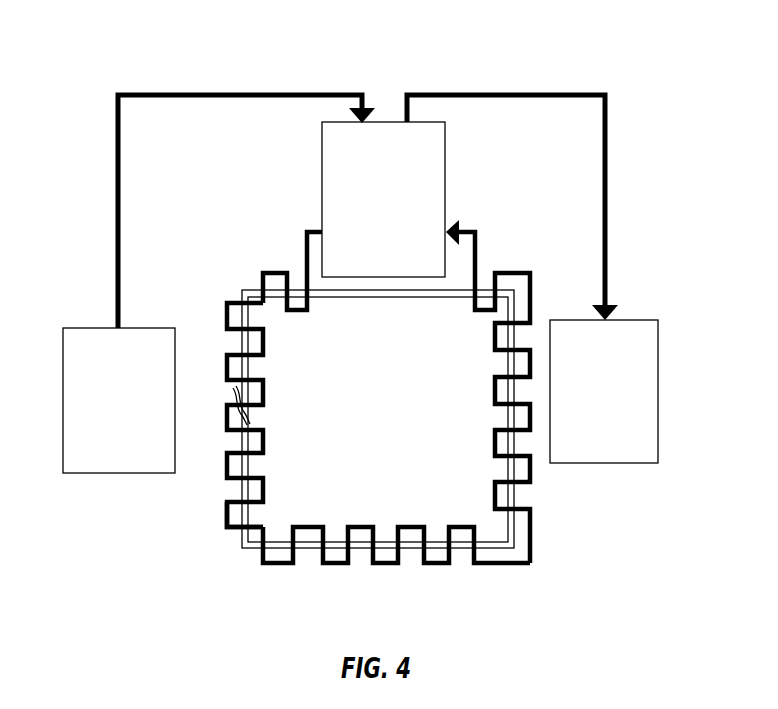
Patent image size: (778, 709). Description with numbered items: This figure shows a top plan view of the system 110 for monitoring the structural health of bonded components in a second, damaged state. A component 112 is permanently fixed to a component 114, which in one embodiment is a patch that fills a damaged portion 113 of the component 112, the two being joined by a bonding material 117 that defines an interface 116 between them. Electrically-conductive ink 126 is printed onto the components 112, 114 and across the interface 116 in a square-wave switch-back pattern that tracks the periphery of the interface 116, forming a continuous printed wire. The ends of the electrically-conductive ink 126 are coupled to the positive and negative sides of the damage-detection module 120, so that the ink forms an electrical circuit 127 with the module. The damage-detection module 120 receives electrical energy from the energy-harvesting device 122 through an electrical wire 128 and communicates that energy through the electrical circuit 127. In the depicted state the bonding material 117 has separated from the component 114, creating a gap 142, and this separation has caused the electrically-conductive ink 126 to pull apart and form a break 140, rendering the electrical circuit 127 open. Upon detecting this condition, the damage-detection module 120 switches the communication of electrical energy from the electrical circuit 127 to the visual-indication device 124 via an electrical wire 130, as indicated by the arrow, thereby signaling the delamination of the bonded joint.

The system 110 is at (547, 182).
The component 112 is at (334, 456).
The damaged portion 113 is at (412, 568).
The component 114 is at (473, 480).
The interface 116 is at (248, 562).
The bonding material 117 is at (242, 548).
The damage-detection module 120 is at (400, 260).
The energy-harvesting device 122 is at (101, 458).
The visual-indication device 124 is at (587, 448).
The electrically-conductive ink 126 is at (320, 308).
The electrical circuit 127 is at (213, 528).
The electrical wire 128 is at (212, 97).
The electrical wire 130 is at (452, 93).
The break 140 is at (277, 420).
The gap 142 is at (224, 388).